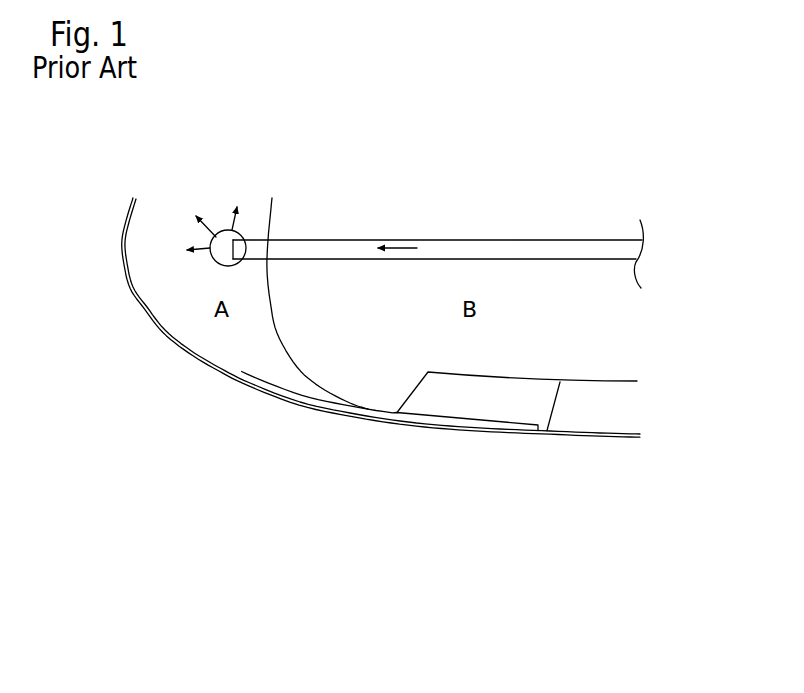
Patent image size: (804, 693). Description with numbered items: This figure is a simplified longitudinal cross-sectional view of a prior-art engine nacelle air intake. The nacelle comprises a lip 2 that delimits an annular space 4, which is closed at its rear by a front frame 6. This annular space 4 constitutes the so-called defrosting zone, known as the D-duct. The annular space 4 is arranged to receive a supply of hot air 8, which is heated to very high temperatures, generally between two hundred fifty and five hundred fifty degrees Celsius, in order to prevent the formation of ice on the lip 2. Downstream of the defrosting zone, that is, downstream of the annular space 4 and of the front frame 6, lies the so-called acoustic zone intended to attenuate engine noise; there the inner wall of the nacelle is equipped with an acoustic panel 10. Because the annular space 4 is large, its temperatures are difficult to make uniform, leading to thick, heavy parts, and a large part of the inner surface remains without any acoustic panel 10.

The lip 2 is at (169, 356).
The annular space 4 is at (173, 292).
The front frame 6 is at (272, 287).
The hot air 8 is at (175, 238).
The acoustic panel 10 is at (606, 423).